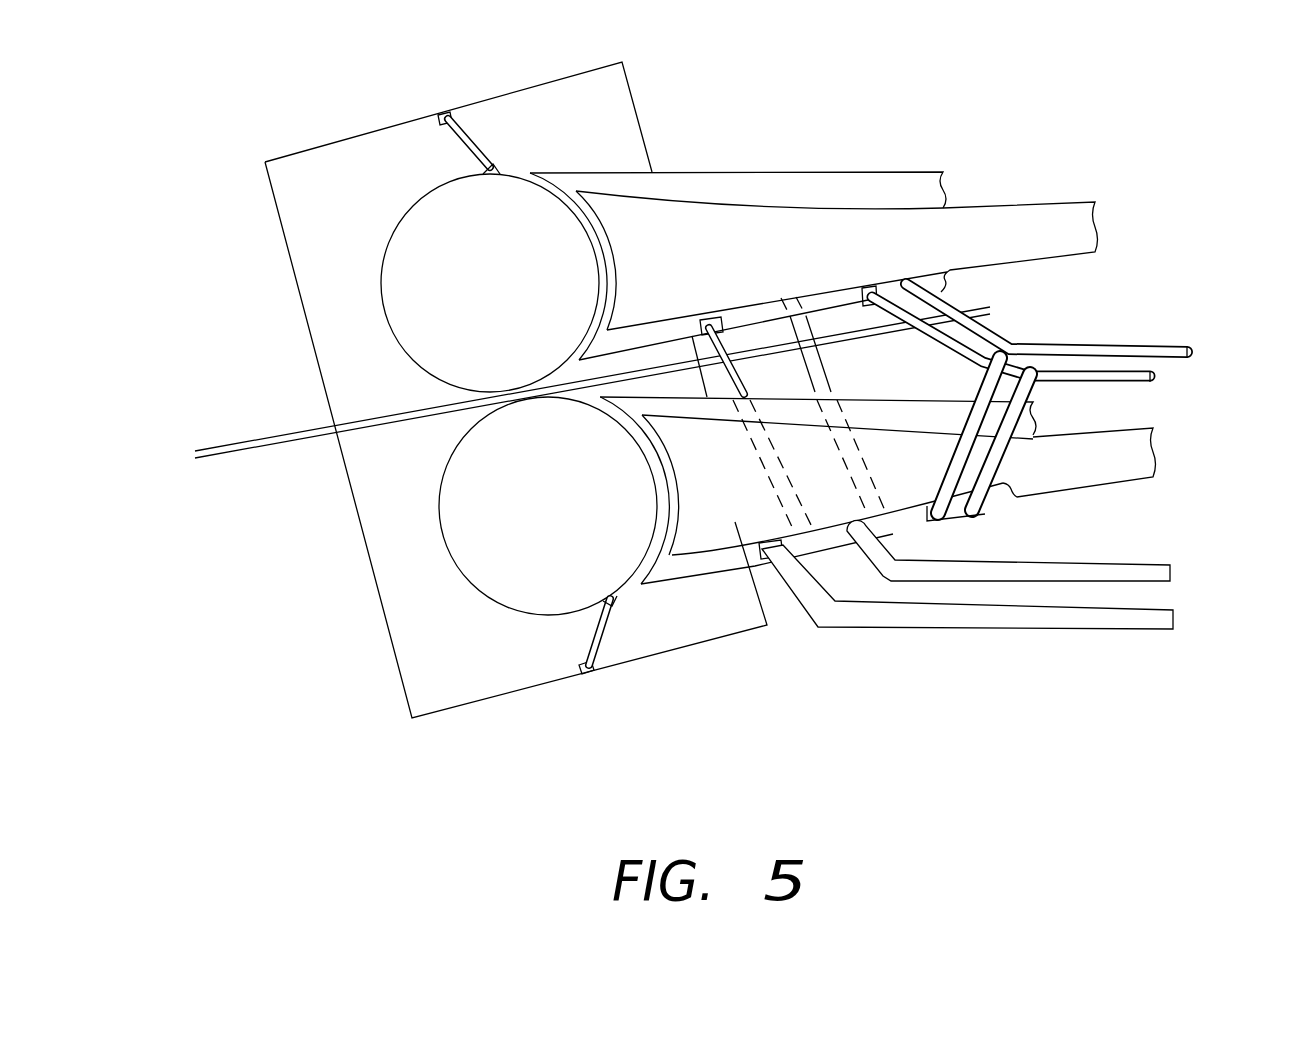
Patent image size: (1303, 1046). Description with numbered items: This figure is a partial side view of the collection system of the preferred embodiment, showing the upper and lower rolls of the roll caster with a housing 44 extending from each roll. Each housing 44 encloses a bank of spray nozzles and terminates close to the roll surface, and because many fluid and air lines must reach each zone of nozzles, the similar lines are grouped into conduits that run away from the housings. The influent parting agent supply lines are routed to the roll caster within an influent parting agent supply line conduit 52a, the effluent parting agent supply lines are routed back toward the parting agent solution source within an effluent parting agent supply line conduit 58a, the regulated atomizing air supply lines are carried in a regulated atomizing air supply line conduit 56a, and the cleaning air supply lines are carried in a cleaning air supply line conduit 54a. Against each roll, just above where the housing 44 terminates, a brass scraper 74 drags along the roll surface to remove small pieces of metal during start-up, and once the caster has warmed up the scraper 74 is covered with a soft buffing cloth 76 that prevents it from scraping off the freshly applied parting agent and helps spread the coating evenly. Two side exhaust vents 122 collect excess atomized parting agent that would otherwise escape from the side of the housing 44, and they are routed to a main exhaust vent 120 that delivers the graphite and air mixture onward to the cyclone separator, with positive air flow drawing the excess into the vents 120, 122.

The housing 44 is at (760, 190).
The side exhaust vent 122 is at (670, 217).
The main exhaust vent 120 is at (1012, 217).
The brass scraper 74 is at (492, 170).
The soft buffing cloth 76 is at (495, 172).
The cleaning air supply line conduit 54a is at (1117, 348).
The regulated atomizing air supply line conduit 56a is at (1110, 380).
The effluent parting agent supply line conduit 58a is at (1110, 573).
The influent parting agent supply line conduit 52a is at (1063, 615).